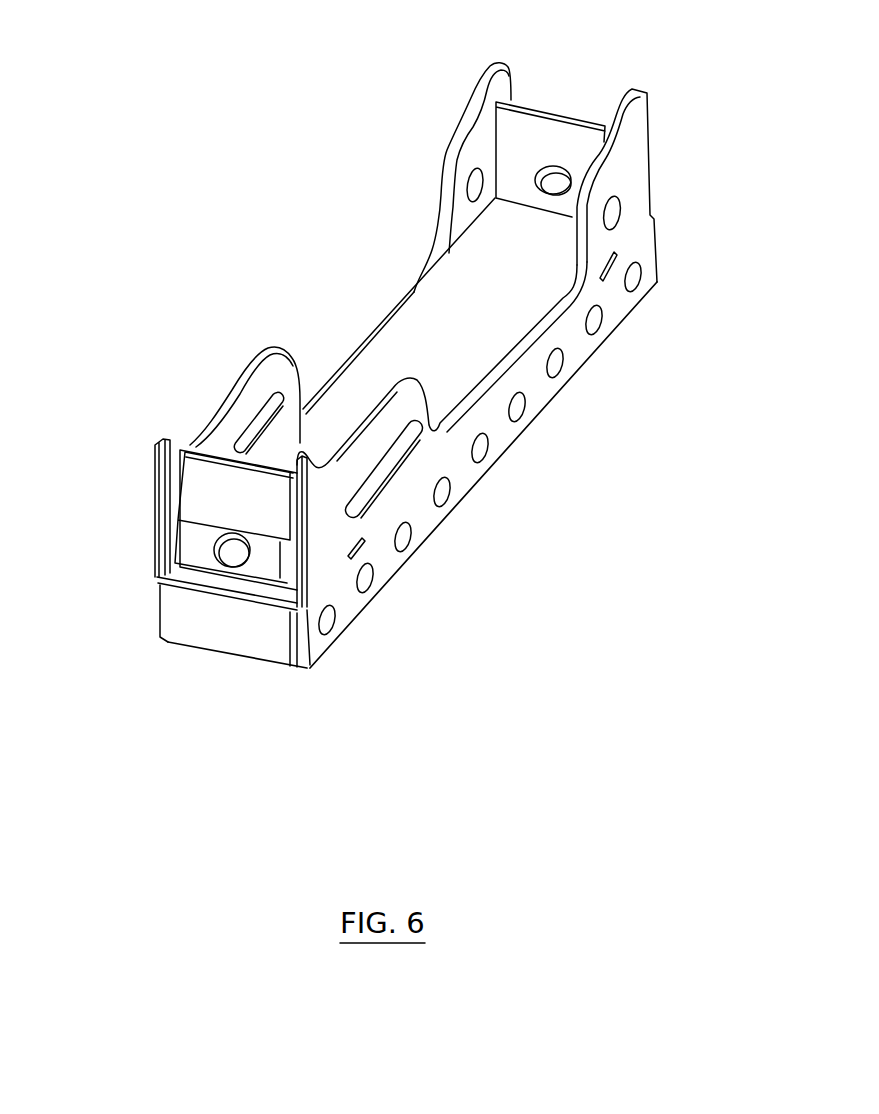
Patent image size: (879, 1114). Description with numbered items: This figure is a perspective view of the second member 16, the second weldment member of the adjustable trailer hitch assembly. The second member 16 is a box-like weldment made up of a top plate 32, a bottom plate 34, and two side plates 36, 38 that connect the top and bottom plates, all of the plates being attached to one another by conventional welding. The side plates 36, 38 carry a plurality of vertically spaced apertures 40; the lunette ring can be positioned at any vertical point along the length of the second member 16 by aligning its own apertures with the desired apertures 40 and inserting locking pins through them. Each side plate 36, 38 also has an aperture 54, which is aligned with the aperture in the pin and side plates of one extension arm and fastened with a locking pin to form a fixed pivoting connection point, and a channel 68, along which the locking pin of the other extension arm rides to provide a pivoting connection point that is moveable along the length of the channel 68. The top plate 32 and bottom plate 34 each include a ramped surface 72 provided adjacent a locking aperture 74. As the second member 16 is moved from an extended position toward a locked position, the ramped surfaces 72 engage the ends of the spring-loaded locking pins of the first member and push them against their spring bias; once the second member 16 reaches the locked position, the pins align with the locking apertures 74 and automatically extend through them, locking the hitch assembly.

The second member 16 is at (218, 228).
The top plate 32 is at (207, 620).
The bottom plate 34 is at (587, 143).
The side plate 36 is at (610, 307).
The side plate 38 is at (443, 157).
The apertures 40 is at (570, 382).
The aperture 54 is at (487, 160).
The channel 68 is at (250, 421).
The ramped surfaces 72 is at (565, 107).
The locking apertures 74 is at (549, 205).